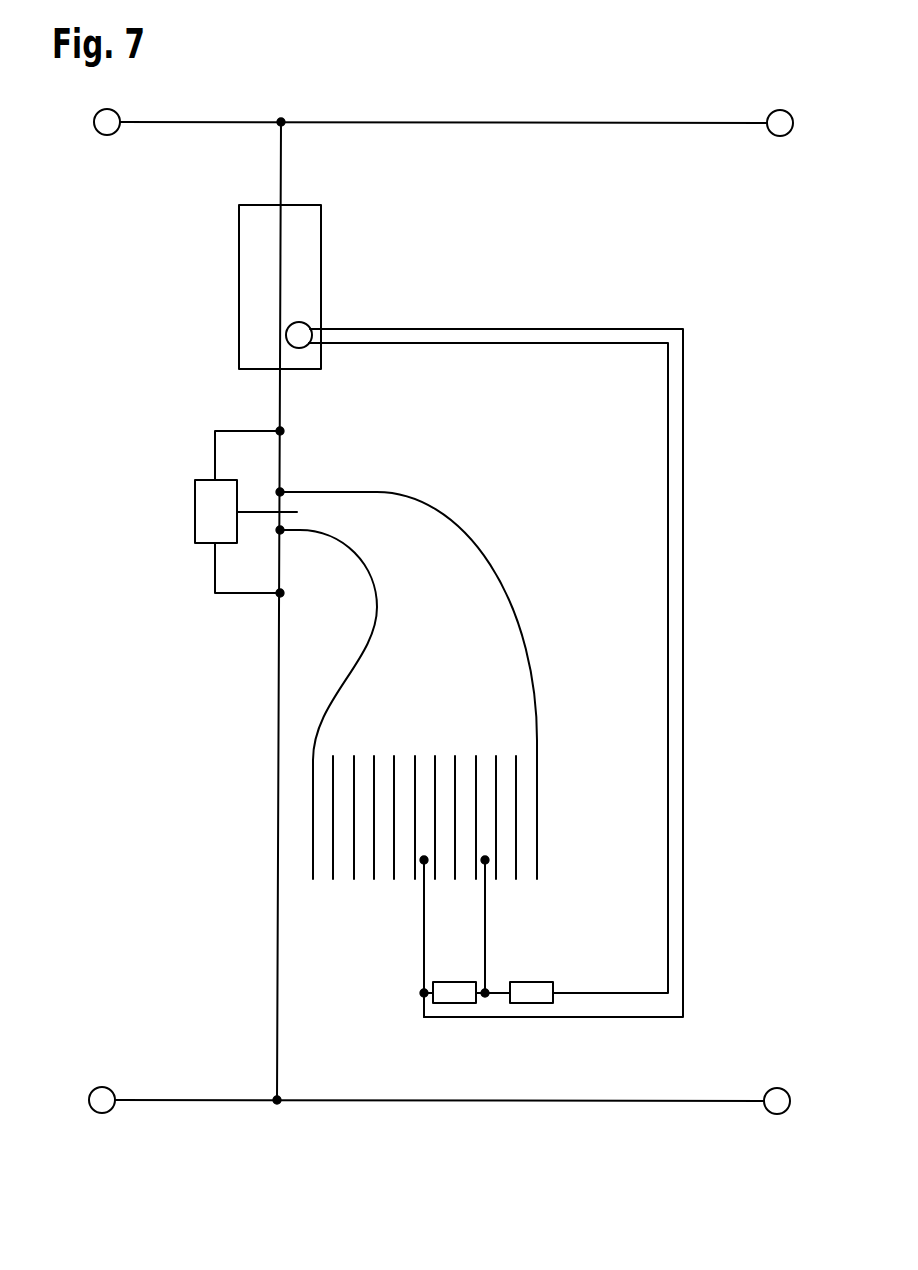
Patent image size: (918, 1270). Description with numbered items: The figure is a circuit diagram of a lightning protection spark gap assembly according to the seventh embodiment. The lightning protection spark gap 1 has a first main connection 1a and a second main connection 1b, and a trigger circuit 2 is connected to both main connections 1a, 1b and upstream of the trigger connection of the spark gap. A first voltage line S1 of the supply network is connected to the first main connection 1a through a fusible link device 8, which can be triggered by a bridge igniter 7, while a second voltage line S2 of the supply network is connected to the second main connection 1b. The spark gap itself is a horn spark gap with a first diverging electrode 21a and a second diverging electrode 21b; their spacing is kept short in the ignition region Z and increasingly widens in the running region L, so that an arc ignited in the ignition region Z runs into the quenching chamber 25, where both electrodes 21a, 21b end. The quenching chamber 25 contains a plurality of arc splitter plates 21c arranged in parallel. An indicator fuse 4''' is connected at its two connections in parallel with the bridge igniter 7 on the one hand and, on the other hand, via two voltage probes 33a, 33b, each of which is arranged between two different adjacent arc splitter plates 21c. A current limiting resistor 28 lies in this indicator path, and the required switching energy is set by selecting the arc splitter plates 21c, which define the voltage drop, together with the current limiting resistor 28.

The first voltage line S1 is at (577, 122).
The second voltage line S2 is at (477, 1100).
The fusible link device 8 is at (239, 280).
The bridge igniter 7 is at (286, 335).
The lightning protection spark gap 1 is at (208, 515).
The first main connection 1a is at (280, 431).
The second main connection 1b is at (280, 593).
The trigger circuit 2 is at (195, 528).
The ignition region Z is at (315, 515).
The first diverging electrode 21a is at (377, 492).
The second diverging electrode 21b is at (358, 565).
The arc splitter plates 21c is at (333, 850).
The quenching chamber 25 is at (411, 781).
The running region L is at (443, 715).
The first voltage probe 33a is at (424, 860).
The second voltage probe 33b is at (485, 860).
The indicator fuse 4''' is at (454, 950).
The current limiting resistor 28 is at (545, 982).